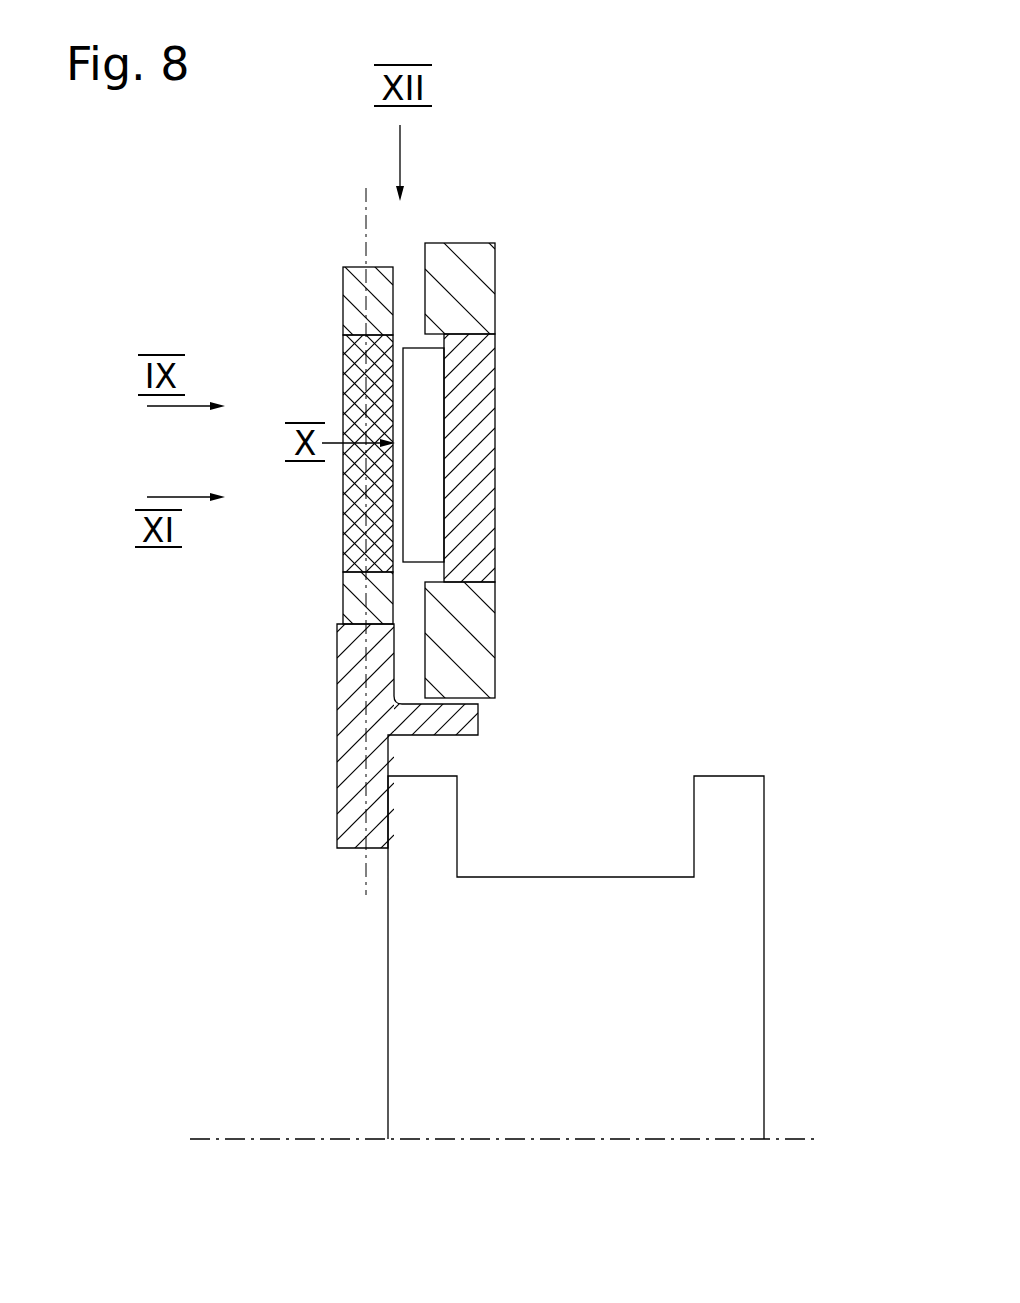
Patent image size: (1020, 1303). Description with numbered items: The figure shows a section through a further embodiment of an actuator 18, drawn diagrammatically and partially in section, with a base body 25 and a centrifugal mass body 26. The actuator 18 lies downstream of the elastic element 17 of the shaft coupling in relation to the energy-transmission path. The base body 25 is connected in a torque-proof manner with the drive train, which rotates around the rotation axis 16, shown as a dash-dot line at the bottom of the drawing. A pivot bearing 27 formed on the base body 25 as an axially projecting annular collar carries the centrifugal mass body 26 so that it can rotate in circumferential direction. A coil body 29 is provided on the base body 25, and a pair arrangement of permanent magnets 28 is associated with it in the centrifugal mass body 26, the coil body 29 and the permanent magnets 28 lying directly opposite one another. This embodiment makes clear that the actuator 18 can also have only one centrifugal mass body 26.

The rotation axis 16 is at (267, 1138).
The elastic element 17 is at (571, 960).
The actuator 18 is at (480, 308).
The base body 25 is at (356, 268).
The centrifugal mass body 26 is at (473, 243).
The pivot bearing 27 is at (438, 686).
The permanent magnets 28 is at (423, 467).
The coil 29 is at (343, 535).